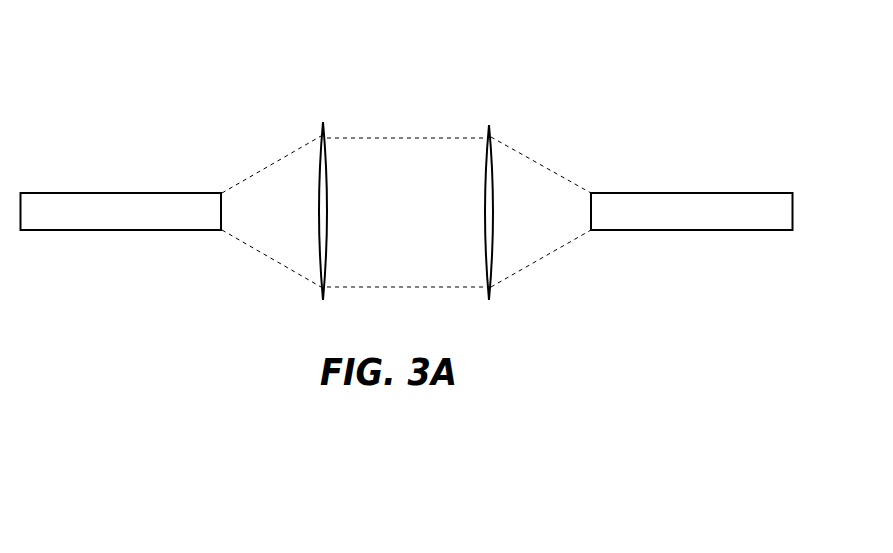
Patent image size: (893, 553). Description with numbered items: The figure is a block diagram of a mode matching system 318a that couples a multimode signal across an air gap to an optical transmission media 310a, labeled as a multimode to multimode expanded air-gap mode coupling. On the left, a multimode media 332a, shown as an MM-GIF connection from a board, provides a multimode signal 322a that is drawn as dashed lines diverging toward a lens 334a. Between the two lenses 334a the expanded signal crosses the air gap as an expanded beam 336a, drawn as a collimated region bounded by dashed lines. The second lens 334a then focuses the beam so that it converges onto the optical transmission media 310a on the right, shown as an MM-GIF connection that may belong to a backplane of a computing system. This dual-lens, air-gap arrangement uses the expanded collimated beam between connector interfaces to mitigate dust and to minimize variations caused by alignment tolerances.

The mode matching system 318a is at (255, 46).
The multimode signal 322a is at (276, 168).
The multimode media 332a is at (92, 232).
The lens 334a is at (489, 125).
The expanded beam 336a is at (428, 214).
The optical transmission media 310a is at (718, 231).